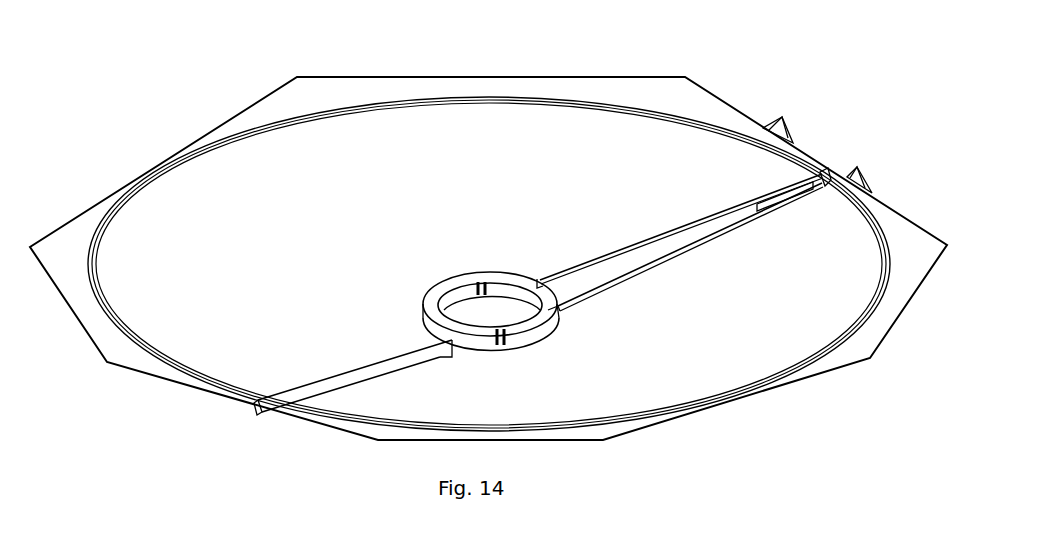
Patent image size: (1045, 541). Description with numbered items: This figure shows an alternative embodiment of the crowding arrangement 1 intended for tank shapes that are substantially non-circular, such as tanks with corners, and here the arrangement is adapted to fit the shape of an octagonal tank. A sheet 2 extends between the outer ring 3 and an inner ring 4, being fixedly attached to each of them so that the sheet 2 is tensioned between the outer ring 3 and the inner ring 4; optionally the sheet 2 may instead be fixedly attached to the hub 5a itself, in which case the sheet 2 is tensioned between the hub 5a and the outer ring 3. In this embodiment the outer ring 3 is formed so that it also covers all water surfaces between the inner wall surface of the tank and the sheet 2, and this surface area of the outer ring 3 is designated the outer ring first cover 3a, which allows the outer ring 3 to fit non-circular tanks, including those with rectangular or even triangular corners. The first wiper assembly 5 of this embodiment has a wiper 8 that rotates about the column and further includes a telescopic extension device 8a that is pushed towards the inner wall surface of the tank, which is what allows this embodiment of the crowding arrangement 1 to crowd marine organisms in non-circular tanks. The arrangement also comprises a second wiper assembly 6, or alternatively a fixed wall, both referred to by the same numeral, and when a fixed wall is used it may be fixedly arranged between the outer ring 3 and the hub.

The crowding arrangement 1 is at (890, 50).
The sheet 2 is at (200, 197).
The outer ring 3 is at (285, 107).
The outer ring first cover 3a is at (320, 100).
The inner ring 4 is at (453, 277).
The first wiper assembly 5 is at (680, 242).
The hub 5a is at (420, 318).
The second wiper assembly 6 is at (302, 385).
The wiper 8 is at (785, 196).
The telescopic extension device 8a is at (873, 131).